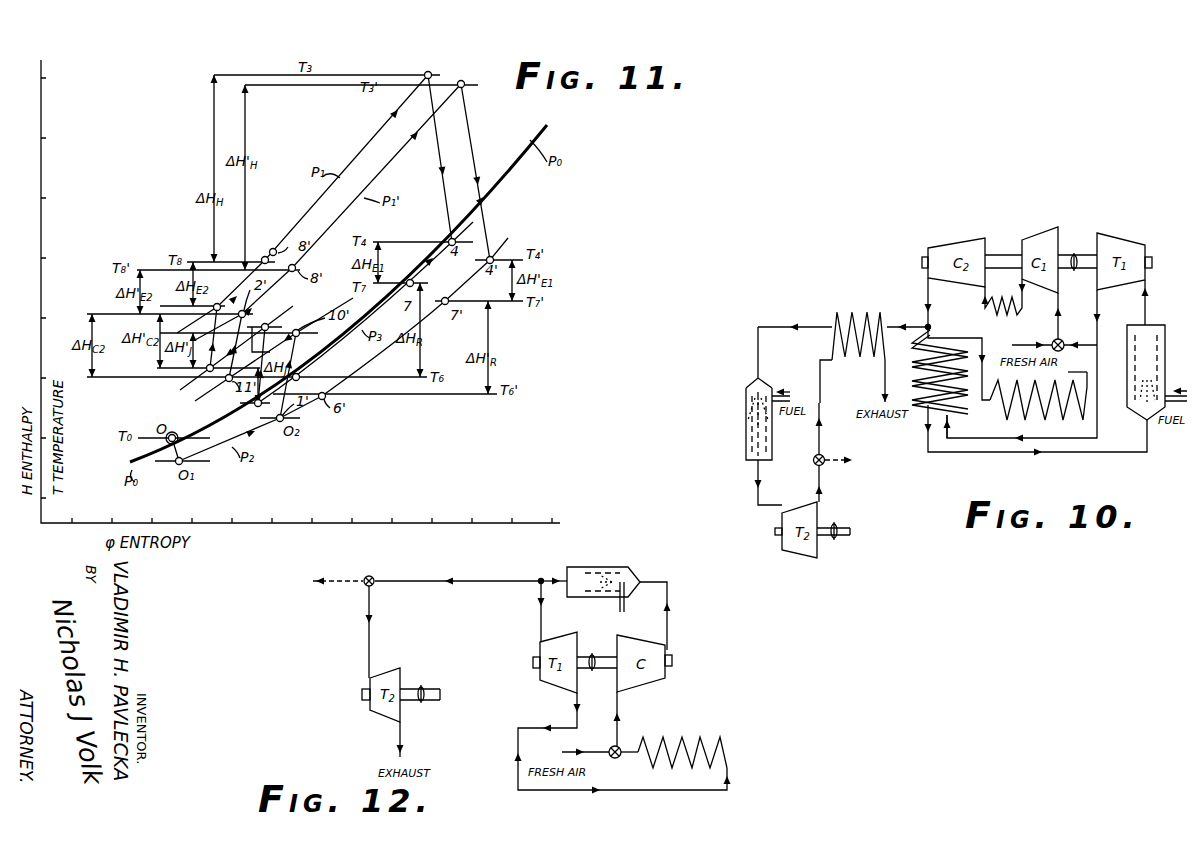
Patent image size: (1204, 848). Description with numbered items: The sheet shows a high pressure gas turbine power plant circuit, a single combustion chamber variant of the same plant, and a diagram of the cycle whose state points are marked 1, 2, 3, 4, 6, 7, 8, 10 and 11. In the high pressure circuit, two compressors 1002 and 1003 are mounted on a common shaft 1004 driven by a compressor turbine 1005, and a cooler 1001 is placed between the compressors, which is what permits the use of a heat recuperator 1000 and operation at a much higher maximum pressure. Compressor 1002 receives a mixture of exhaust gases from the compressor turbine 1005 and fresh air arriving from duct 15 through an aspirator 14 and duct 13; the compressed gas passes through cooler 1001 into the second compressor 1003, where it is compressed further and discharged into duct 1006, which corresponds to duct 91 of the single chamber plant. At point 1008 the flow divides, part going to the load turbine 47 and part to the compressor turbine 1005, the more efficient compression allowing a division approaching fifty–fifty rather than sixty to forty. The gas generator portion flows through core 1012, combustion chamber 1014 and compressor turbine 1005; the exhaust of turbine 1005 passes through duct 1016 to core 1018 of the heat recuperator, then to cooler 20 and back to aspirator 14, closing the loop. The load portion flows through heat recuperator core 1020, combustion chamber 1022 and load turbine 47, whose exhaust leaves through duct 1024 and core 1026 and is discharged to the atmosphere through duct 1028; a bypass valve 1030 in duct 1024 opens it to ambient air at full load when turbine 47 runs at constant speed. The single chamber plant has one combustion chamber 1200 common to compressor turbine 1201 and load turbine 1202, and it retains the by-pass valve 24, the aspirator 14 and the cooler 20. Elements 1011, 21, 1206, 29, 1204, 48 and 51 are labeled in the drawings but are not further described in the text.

In FIG. 11, the state point 1 is at (256, 406).
In FIG. 11, the state point 2 is at (218, 303).
In FIG. 11, the state point 3 is at (438, 68).
In FIG. 11, the state point 4 is at (455, 248).
In FIG. 11, the state point 6 is at (298, 380).
In FIG. 11, the state point 7 is at (409, 300).
In FIG. 11, the state point 8 is at (265, 256).
In FIG. 11, the state point 10 is at (268, 324).
In FIG. 11, the state point 11 is at (207, 371).
In FIG. 10, the compressor 1003 is at (952, 245).
In FIG. 10, the shaft 1004 is at (998, 255).
In FIG. 10, the compressor 1002 is at (1045, 236).
In FIG. 10, the compressor turbine 1005 is at (1118, 240).
In FIG. 10, the duct 1006 is at (926, 294).
In FIG. 10, the point 1008 is at (920, 323).
In FIG. 10, the conduit 1011 is at (851, 300).
In FIG. 10, the heat recuperator core 1020 is at (833, 318).
In FIG. 10, the core 1026 is at (860, 368).
In FIG. 10, the duct 1028 is at (884, 380).
In FIG. 10, the duct 1024 is at (821, 401).
In FIG. 10, the combustion chamber 1022 is at (745, 442).
In FIG. 10, the bypass valve 1030 is at (823, 465).
In FIG. 10, the load turbine 47 is at (800, 556).
In FIG. 10, the cooler 1001 is at (993, 321).
In FIG. 10, the heat recuperator 1000 is at (924, 402).
In FIG. 10, the core 1012 is at (928, 437).
In FIG. 10, the combustion chamber 1014 is at (1165, 332).
In FIG. 10, the duct 1016 is at (1098, 306).
In FIG. 10, the core 1018 is at (948, 416).
In FIG. 10, the duct 13 is at (1062, 327).
In FIG. 12, the duct 13 is at (620, 703).
In FIG. 10, the aspirator 14 is at (1064, 341).
In FIG. 12, the aspirator 14 is at (622, 746).
In FIG. 10, the duct 15 is at (1033, 344).
In FIG. 12, the duct 15 is at (593, 750).
In FIG. 10, the cooler 20 is at (1038, 405).
In FIG. 12, the cooler 20 is at (690, 740).
In FIG. 10, the conduit 21 is at (1068, 372).
In FIG. 12, the conduit 21 is at (517, 771).
In FIG. 12, the by-pass valve 24 is at (370, 575).
In FIG. 12, the conduit 1206 is at (492, 579).
In FIG. 12, the combustion chamber 1200 is at (593, 566).
In FIG. 12, the duct 91 is at (668, 592).
In FIG. 12, the conduit 29 is at (540, 620).
In FIG. 12, the compressor turbine 1201 is at (561, 688).
In FIG. 12, the compressor C 1204 is at (637, 646).
In FIG. 12, the conduit 48 is at (368, 602).
In FIG. 12, the load turbine 1202 is at (393, 670).
In FIG. 12, the exhaust conduit 51 is at (398, 737).